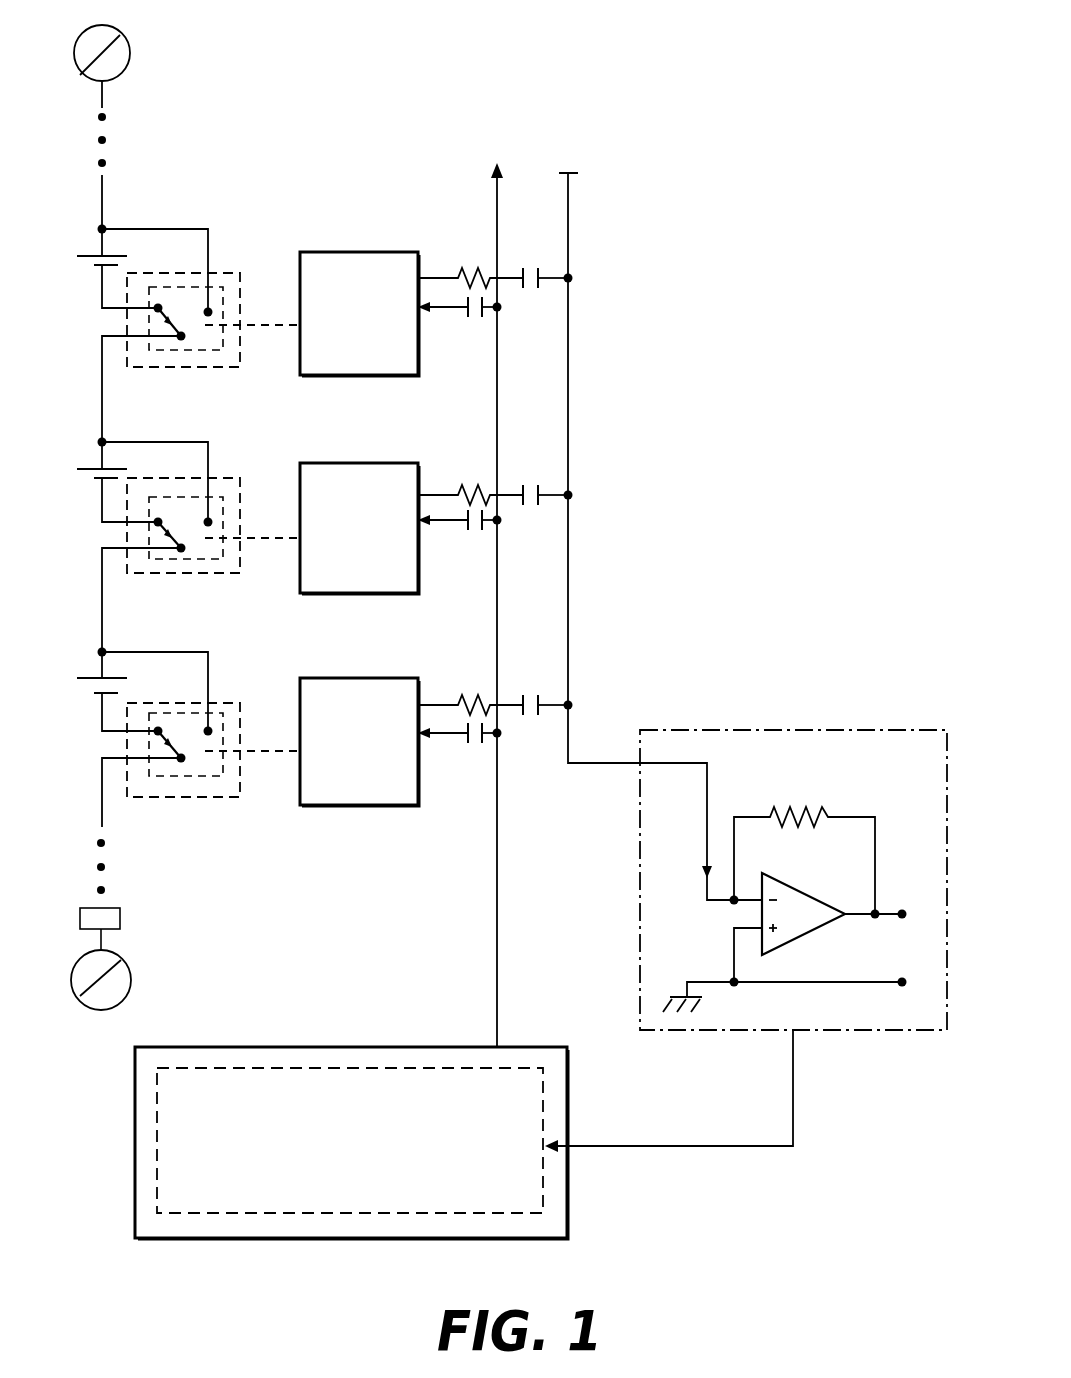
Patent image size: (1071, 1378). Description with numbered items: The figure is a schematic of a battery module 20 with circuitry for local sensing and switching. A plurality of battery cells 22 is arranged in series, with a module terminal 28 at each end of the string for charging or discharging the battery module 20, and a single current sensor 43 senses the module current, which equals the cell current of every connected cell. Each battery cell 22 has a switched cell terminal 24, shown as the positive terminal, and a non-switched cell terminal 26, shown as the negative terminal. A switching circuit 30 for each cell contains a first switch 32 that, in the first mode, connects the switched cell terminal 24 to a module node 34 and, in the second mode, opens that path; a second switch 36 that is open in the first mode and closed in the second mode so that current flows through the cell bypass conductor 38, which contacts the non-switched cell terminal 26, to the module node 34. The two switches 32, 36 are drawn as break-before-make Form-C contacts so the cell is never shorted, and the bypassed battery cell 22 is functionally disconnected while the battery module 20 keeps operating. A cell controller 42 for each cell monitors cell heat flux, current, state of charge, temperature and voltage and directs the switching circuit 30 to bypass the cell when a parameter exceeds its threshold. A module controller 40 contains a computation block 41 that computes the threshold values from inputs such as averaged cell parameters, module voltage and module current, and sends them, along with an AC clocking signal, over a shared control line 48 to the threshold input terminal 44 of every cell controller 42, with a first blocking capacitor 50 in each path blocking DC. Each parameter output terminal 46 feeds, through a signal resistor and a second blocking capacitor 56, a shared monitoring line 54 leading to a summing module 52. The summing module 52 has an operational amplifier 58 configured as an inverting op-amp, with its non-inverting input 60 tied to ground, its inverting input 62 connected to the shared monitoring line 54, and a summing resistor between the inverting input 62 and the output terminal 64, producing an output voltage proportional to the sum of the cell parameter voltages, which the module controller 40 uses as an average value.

The battery module 20 is at (285, 112).
The battery cell 22 is at (84, 249).
The switched cell terminal 24 is at (101, 240).
The non-switched cell terminal 26 is at (102, 285).
The module terminal 28 is at (74, 60).
The switching circuit 30 is at (236, 273).
The first switch 32 is at (222, 320).
The second switch 36 is at (170, 533).
The module node 34 is at (102, 361).
The cell bypass conductor 38 is at (183, 229).
The module controller 40 is at (300, 1047).
The computation block 41 is at (378, 1068).
The cell controller 42 is at (360, 252).
The current sensor 43 is at (122, 917).
The threshold input terminal 44 is at (455, 310).
The parameter output terminal 46 is at (440, 278).
The shared control line 48 is at (497, 220).
The first blocking capacitor 50 is at (474, 318).
The summing module 52 is at (828, 730).
The shared monitoring line 54 is at (568, 232).
The second blocking capacitor 56 is at (527, 290).
The operational amplifier 58 is at (805, 900).
The non-inverting input 60 is at (762, 920).
The inverting input 62 is at (762, 908).
The output terminal 64 is at (840, 910).